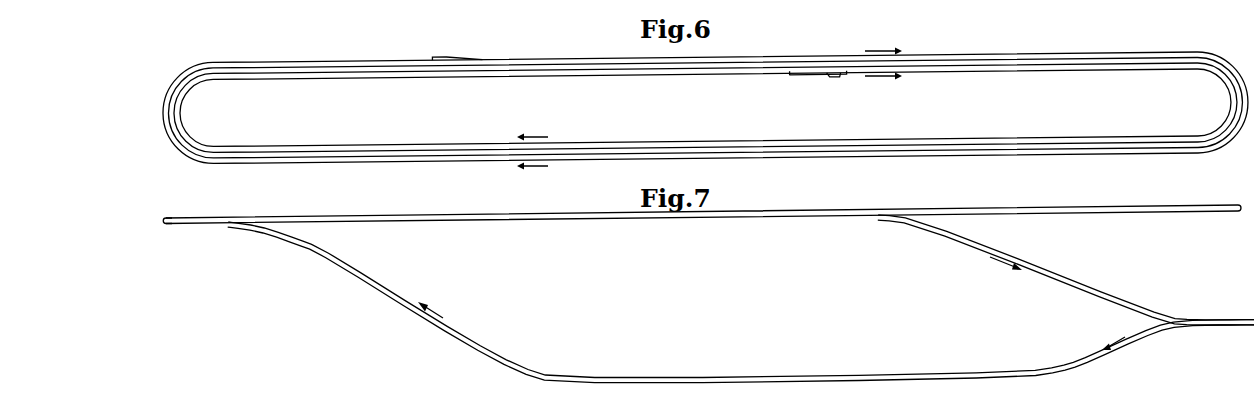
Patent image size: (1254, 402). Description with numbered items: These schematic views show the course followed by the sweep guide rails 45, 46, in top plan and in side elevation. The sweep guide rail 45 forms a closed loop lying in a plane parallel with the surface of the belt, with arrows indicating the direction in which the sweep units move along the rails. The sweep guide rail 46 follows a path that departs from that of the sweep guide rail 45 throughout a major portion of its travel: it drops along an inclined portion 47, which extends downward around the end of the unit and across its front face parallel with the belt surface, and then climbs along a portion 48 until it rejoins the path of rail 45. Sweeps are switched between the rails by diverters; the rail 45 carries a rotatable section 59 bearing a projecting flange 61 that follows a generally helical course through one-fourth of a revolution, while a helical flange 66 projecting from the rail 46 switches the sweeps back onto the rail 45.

In FIG. 6, the sweep guide rail 45 is at (325, 82).
In FIG. 7, the sweep guide rail 45 is at (414, 222).
In FIG. 6, the sweep guide rail 46 is at (303, 61).
In FIG. 7, the sweep guide rail 46 is at (184, 228).
In FIG. 7, the inclined portion 47 is at (1082, 282).
In FIG. 7, the upward portion 48 is at (392, 301).
In FIG. 6, the rotatable section 59 is at (809, 73).
In FIG. 6, the projecting flange 61 is at (836, 74).
In FIG. 6, the helical flange 66 is at (443, 61).